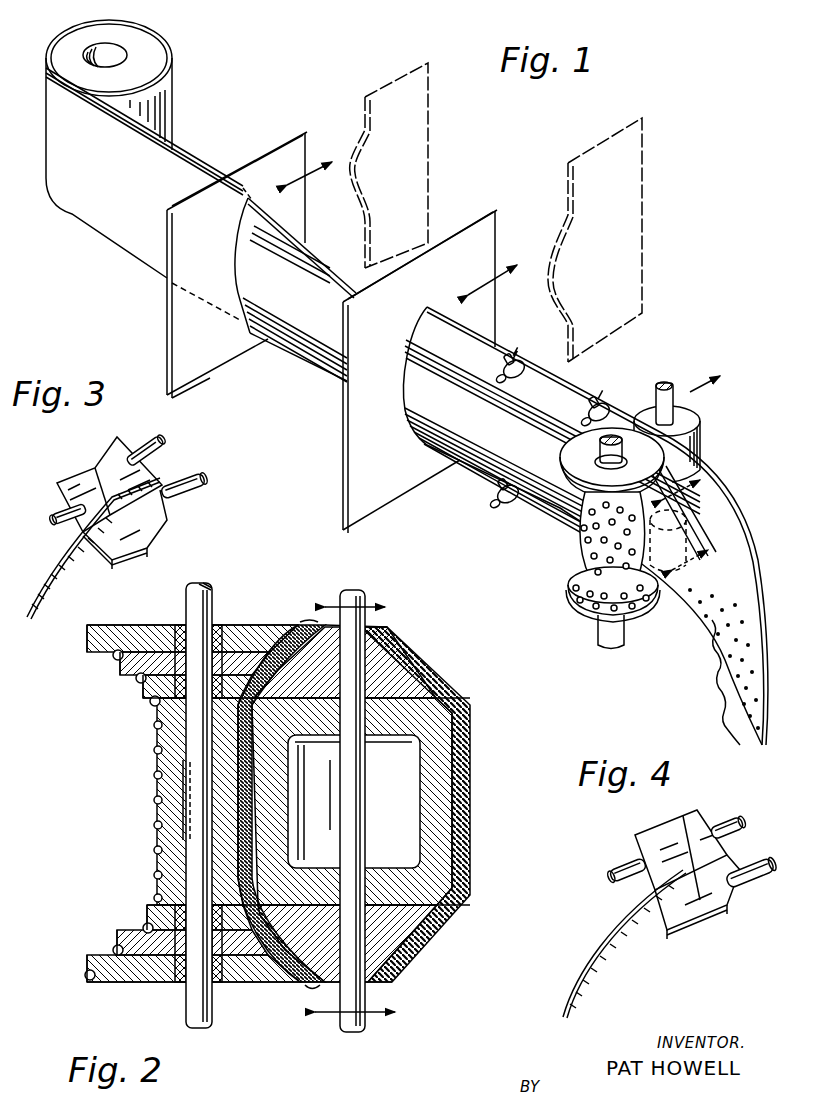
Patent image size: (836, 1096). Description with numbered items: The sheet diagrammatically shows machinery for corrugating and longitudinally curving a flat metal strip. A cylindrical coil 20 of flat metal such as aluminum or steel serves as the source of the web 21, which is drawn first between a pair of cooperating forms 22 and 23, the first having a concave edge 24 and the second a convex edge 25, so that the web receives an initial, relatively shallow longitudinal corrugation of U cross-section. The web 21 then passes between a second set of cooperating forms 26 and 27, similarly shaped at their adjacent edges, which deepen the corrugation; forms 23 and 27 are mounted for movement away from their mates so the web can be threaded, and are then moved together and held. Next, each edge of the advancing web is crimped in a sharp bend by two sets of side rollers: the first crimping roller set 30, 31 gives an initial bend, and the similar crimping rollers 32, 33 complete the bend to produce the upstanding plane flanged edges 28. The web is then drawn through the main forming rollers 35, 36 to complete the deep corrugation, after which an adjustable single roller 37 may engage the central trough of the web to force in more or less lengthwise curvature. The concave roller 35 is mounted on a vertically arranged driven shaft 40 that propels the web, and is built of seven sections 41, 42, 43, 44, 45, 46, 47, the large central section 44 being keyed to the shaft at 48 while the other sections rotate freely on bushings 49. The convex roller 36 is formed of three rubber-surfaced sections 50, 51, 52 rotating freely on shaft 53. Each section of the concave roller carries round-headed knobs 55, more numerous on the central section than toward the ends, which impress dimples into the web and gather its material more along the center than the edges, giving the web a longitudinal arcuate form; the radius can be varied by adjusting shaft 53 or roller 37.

In FIG. 1, the cylindrical coil of flat metal strip 20 is at (160, 55).
In FIG. 1, the web 21 is at (172, 172).
In FIG. 3, the web 21 is at (54, 572).
In FIG. 4, the web 21 is at (607, 948).
In FIG. 2, the web 21 is at (240, 858).
In FIG. 1, the form 22 is at (175, 305).
In FIG. 1, the form 23 is at (292, 141).
In FIG. 1, the concave edge 24 is at (238, 262).
In FIG. 1, the convex edge 25 is at (350, 212).
In FIG. 1, the form 26 is at (350, 436).
In FIG. 1, the form 27 is at (474, 224).
In FIG. 1, the flanged edges 28 is at (745, 535).
In FIG. 3, the flanged edges 28 is at (166, 520).
In FIG. 4, the flanged edges 28 is at (726, 897).
In FIG. 2, the flanged edges 28 is at (320, 622).
In FIG. 1, the crimping roller 30 is at (516, 356).
In FIG. 3, the crimping roller 30 is at (106, 460).
In FIG. 3, the crimping roller 31 is at (135, 552).
In FIG. 1, the crimping roller 32 is at (604, 398).
In FIG. 4, the crimping roller 32 is at (640, 843).
In FIG. 4, the crimping roller 33 is at (690, 933).
In FIG. 1, the concave roller 35 is at (586, 552).
In FIG. 2, the concave roller 35 is at (155, 730).
In FIG. 1, the convex roller 36 is at (698, 432).
In FIG. 2, the convex roller 36 is at (475, 712).
In FIG. 1, the roller 37 is at (700, 500).
In FIG. 1, the shaft 40 is at (600, 630).
In FIG. 2, the shaft 40 is at (190, 603).
In FIG. 2, the roller section 41 is at (98, 632).
In FIG. 2, the roller section 42 is at (118, 658).
In FIG. 2, the roller section 43 is at (137, 684).
In FIG. 2, the central section 44 is at (165, 793).
In FIG. 2, the roller section 45 is at (148, 922).
In FIG. 2, the roller section 46 is at (125, 948).
In FIG. 2, the roller section 47 is at (92, 971).
In FIG. 2, the key 48 is at (182, 816).
In FIG. 2, the bushings 49 is at (217, 626).
In FIG. 2, the roller section 50 is at (400, 668).
In FIG. 2, the roller section 51 is at (430, 806).
In FIG. 2, the roller section 52 is at (416, 940).
In FIG. 1, the shaft 53 is at (676, 400).
In FIG. 2, the shaft 53 is at (352, 594).
In FIG. 1, the knobs 55 is at (592, 574).
In FIG. 2, the knobs 55 is at (122, 668).